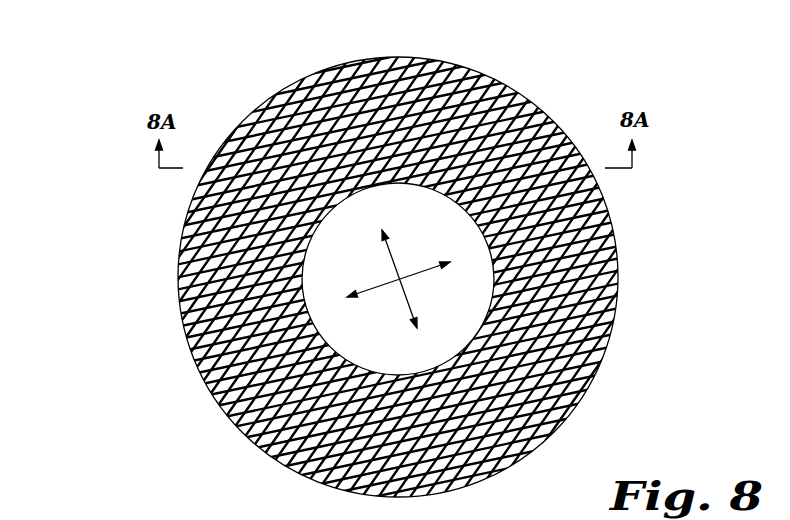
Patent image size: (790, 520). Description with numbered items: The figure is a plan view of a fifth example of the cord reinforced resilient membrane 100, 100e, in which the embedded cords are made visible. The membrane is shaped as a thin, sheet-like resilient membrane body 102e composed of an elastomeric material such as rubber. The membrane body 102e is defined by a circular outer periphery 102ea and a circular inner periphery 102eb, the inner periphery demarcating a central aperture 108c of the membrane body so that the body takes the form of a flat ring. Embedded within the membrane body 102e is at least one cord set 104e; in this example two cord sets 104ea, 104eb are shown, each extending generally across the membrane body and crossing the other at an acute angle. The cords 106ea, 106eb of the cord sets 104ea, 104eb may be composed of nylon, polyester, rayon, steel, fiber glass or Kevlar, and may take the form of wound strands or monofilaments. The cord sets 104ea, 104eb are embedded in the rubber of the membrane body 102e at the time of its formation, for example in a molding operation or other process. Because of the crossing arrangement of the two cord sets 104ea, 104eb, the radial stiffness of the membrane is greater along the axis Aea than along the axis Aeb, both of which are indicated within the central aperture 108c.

The cord reinforced resilient membrane 100 is at (679, 118).
The cord reinforced resilient membrane 100e is at (662, 143).
The membrane body 102e is at (247, 118).
The circular outer periphery 102ea is at (597, 190).
The circular inner periphery 102eb is at (490, 286).
The cord set 104e is at (562, 430).
The first cord set 104ea is at (300, 410).
The second cord set 104eb is at (582, 157).
The cords of the first cord set 106ea is at (583, 400).
The cords of the second cord set 106eb is at (187, 238).
The lumen 108c is at (323, 318).
The axis of greater radial stiffness Aea is at (372, 287).
The axis of lesser radial stiffness Aeb is at (400, 295).